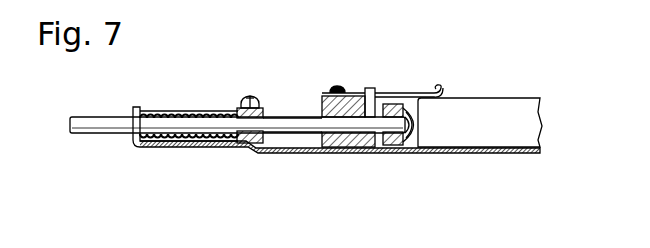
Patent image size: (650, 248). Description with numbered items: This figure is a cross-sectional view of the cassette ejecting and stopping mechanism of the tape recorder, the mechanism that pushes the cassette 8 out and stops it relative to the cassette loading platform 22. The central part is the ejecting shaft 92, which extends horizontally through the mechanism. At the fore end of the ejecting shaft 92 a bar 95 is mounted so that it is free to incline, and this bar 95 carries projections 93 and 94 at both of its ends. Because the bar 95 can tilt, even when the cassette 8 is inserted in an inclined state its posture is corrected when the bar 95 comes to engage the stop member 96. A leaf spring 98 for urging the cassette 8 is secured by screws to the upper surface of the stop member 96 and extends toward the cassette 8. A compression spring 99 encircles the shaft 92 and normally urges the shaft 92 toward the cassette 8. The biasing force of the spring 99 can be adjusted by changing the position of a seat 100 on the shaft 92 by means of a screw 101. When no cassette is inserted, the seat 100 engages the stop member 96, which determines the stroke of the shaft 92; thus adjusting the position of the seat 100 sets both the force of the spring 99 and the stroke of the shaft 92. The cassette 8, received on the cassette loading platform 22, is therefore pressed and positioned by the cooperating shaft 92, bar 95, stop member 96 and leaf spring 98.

The cassette 8 is at (498, 100).
The cassette loading platform 22 is at (293, 153).
The ejecting shaft 92 is at (97, 116).
The projection 93 is at (415, 148).
The projection 94 is at (409, 125).
The bar 95 is at (392, 148).
The stop member 96 is at (349, 153).
The leaf spring 98 is at (418, 92).
The compression spring 99 is at (193, 111).
The seat 100 is at (268, 106).
The screw 101 is at (245, 100).